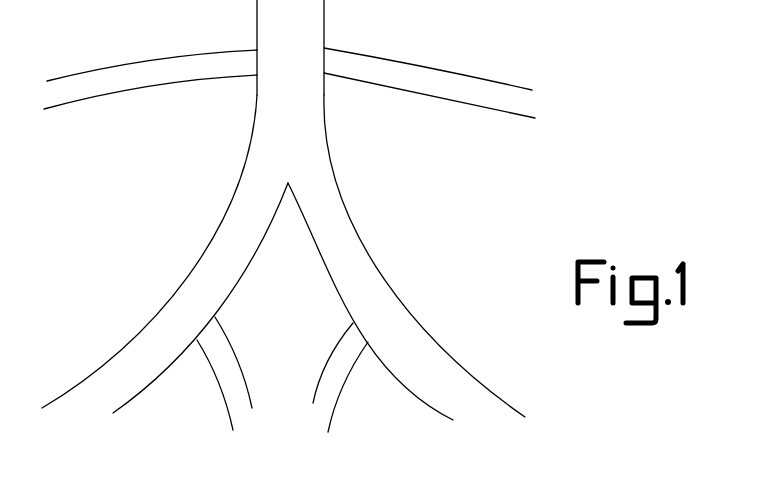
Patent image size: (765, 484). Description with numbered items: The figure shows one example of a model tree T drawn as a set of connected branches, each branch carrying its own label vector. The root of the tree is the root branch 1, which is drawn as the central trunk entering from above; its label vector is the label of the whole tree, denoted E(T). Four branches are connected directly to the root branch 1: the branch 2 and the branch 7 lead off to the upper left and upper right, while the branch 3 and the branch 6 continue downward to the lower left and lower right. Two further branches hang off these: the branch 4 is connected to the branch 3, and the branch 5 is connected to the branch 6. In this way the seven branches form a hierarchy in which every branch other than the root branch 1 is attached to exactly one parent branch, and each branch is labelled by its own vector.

The root branch 1 is at (288, 126).
The branch 2 is at (149, 68).
The branch 3 is at (188, 305).
The branch 4 is at (230, 382).
The branch 5 is at (333, 380).
The branch 6 is at (363, 287).
The branch 7 is at (473, 89).